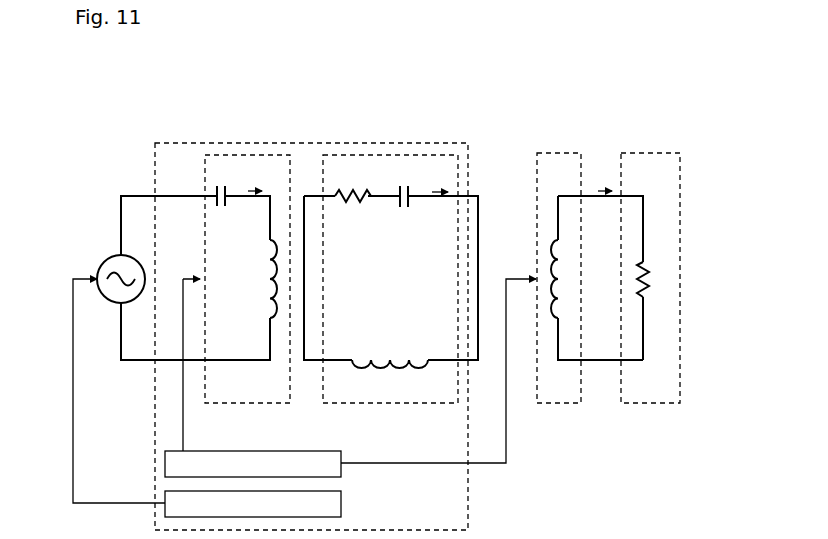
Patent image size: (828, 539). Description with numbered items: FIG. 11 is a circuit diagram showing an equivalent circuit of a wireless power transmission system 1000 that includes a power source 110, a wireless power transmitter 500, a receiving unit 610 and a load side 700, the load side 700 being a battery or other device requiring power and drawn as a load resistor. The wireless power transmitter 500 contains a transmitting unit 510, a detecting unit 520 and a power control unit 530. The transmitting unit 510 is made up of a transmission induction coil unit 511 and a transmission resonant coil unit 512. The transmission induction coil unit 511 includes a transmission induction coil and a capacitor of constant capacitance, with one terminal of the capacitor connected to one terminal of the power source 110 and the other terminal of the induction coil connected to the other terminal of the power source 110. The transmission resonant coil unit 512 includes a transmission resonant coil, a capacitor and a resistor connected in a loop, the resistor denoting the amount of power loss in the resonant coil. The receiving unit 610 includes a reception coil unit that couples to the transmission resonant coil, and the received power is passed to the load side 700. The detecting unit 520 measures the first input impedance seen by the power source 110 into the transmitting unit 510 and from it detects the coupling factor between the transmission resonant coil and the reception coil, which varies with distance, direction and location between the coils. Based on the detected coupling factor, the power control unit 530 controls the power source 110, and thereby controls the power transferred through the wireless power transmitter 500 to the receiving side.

The wireless power transmission system 1000 is at (170, 58).
The power source 110 is at (106, 263).
The wireless power transmitter 500 is at (301, 142).
The transmitting unit 510 is at (372, 101).
The transmission induction coil unit 511 is at (241, 152).
The transmission resonant coil unit 512 is at (352, 152).
The detecting unit 520 is at (322, 451).
The power control unit 530 is at (341, 503).
The receiving unit 610 is at (557, 150).
The load side 700 is at (651, 150).